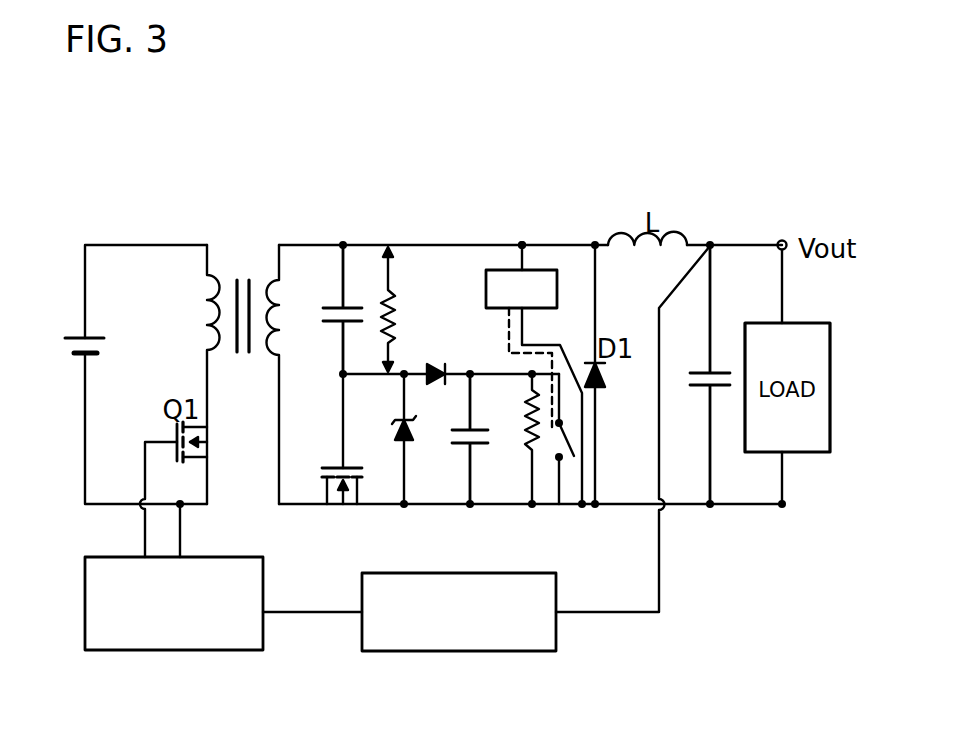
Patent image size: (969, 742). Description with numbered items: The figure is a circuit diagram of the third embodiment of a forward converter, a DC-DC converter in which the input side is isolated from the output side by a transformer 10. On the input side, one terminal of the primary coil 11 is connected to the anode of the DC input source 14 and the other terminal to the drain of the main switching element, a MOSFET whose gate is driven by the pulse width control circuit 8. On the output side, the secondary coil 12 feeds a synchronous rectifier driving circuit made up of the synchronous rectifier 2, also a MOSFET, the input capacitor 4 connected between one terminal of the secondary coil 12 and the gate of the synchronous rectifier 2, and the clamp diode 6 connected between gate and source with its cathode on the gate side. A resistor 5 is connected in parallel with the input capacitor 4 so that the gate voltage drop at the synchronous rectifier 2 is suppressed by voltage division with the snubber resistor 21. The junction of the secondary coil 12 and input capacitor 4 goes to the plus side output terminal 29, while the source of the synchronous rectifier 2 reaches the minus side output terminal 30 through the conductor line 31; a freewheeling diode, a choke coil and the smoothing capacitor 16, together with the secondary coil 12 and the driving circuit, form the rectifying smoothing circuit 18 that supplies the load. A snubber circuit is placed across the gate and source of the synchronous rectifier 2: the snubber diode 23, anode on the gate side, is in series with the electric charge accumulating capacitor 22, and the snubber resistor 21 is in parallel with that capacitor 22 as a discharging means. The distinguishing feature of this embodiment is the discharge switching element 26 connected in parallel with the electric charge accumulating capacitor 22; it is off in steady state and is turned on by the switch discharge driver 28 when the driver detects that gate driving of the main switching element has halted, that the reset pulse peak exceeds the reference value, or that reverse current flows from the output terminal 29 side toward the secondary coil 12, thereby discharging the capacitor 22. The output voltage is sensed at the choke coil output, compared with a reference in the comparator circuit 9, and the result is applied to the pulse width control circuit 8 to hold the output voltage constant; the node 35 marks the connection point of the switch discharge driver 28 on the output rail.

The synchronous rectifier 2 is at (352, 506).
The input capacitor 4 is at (337, 307).
The resistor 5 is at (408, 298).
The clamp diode 6 is at (395, 424).
The pulse width control circuit 8 is at (178, 652).
The comparator circuit 9 is at (493, 653).
The transformer 10 is at (231, 374).
The primary coil 11 is at (207, 315).
The secondary coil 12 is at (278, 350).
The DC input source 14 is at (70, 347).
The smoothing capacitor 16 is at (690, 372).
The rectifying smoothing circuit 18 is at (416, 224).
The snubber resistor 21 is at (528, 448).
The electric charge accumulating capacitor 22 is at (487, 432).
The snubber diode 23 is at (434, 366).
The discharge switching element 26 is at (574, 440).
The switch discharge driver 28 is at (547, 270).
The output terminal 29 is at (781, 241).
The output terminal 30 is at (781, 510).
The conductor line 31 is at (517, 506).
The connection node 35 is at (521, 244).